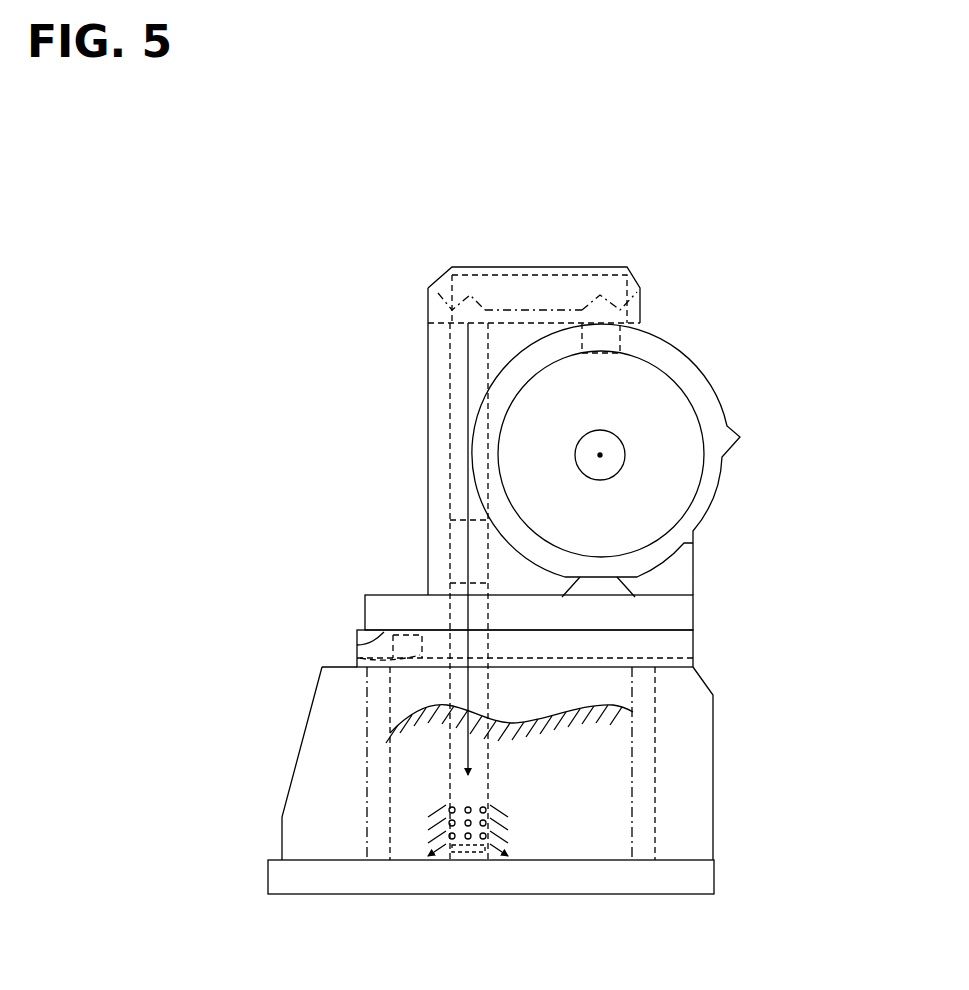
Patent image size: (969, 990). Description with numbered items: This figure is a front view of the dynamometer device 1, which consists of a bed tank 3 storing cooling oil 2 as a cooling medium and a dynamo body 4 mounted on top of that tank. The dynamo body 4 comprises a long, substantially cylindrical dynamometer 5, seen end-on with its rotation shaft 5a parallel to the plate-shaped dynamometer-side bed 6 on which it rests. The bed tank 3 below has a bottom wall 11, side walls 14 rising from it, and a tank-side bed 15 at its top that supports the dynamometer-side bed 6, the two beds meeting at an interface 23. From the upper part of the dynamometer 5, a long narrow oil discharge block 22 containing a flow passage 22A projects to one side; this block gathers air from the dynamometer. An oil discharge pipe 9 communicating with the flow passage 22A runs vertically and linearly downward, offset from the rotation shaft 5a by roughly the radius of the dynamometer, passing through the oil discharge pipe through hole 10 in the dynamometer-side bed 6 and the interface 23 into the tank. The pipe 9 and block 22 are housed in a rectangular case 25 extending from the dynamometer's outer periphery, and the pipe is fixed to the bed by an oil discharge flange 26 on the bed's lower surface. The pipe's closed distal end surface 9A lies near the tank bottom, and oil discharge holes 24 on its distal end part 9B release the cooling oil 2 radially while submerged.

The dynamometer device 1 is at (329, 335).
The cooling oil 2 is at (622, 770).
The bed tank 3 is at (762, 770).
The dynamo body 4 is at (773, 435).
The dynamometer 5 is at (712, 503).
The rotation shaft 5a is at (600, 455).
The dynamometer-side bed 6 is at (683, 618).
The oil discharge pipe 9 is at (489, 805).
The distal end surface 9A is at (478, 853).
The distal end part 9B is at (481, 802).
The oil discharge pipe through hole 10 is at (447, 612).
The bottom wall 11 is at (657, 892).
The side walls 14 is at (373, 788).
The tank-side bed 15 is at (680, 650).
The oil discharge block 22 is at (563, 277).
The flow passage 22A is at (528, 293).
The interface 23 is at (357, 645).
The oil discharge holes 24 is at (448, 853).
The case 25 is at (427, 375).
The oil discharge flange 26 is at (360, 658).